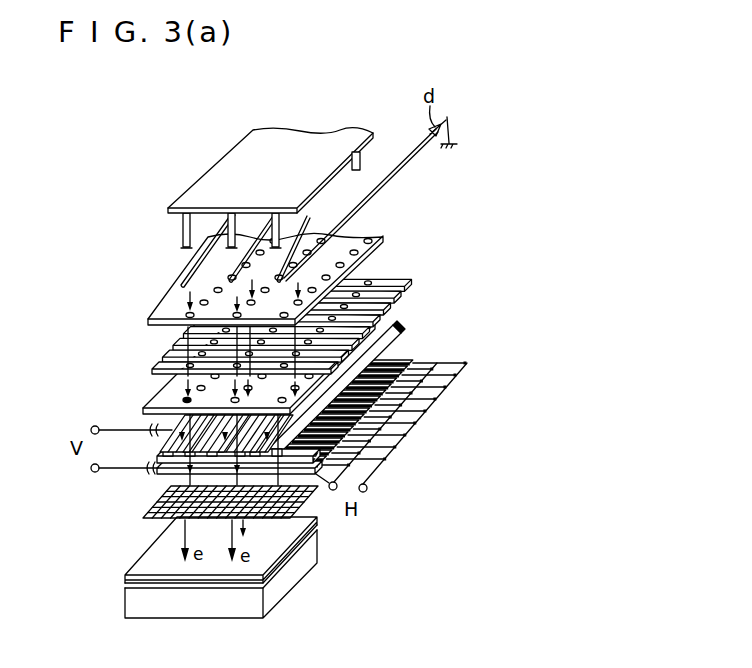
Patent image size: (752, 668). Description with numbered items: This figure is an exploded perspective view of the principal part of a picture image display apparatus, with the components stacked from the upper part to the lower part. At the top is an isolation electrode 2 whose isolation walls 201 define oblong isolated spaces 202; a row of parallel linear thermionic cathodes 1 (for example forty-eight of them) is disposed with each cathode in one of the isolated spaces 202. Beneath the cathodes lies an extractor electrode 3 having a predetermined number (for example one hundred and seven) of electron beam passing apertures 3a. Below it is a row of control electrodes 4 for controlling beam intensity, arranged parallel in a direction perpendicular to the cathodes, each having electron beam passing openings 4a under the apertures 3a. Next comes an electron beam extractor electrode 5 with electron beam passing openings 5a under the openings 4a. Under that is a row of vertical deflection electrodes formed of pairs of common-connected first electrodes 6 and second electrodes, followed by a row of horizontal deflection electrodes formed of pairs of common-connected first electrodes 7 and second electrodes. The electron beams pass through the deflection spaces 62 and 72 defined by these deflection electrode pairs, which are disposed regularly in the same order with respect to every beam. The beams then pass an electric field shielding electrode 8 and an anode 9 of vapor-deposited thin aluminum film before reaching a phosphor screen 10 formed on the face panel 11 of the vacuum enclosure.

The linear thermionic cathode 1 is at (390, 172).
The isolation electrode 2 is at (286, 131).
The isolation wall 201 is at (237, 223).
The isolated space 202 is at (260, 227).
The extractor electrode 3 is at (352, 236).
The electron beam passing aperture 3a is at (383, 239).
The control electrode 4 is at (409, 280).
The electron beam passing opening 4a is at (392, 275).
The electron beam extractor electrode 5 is at (156, 406).
The electron beam passing opening 5a is at (185, 398).
The first vertical deflection electrode 6 is at (165, 456).
The deflection space 62 is at (176, 428).
The first horizontal deflection electrode 7 is at (404, 363).
The deflection space 72 is at (366, 447).
The electric field shielding electrode 8 is at (148, 517).
The anode 9 is at (146, 572).
The phosphor screen 10 is at (145, 584).
The face panel 11 is at (202, 604).